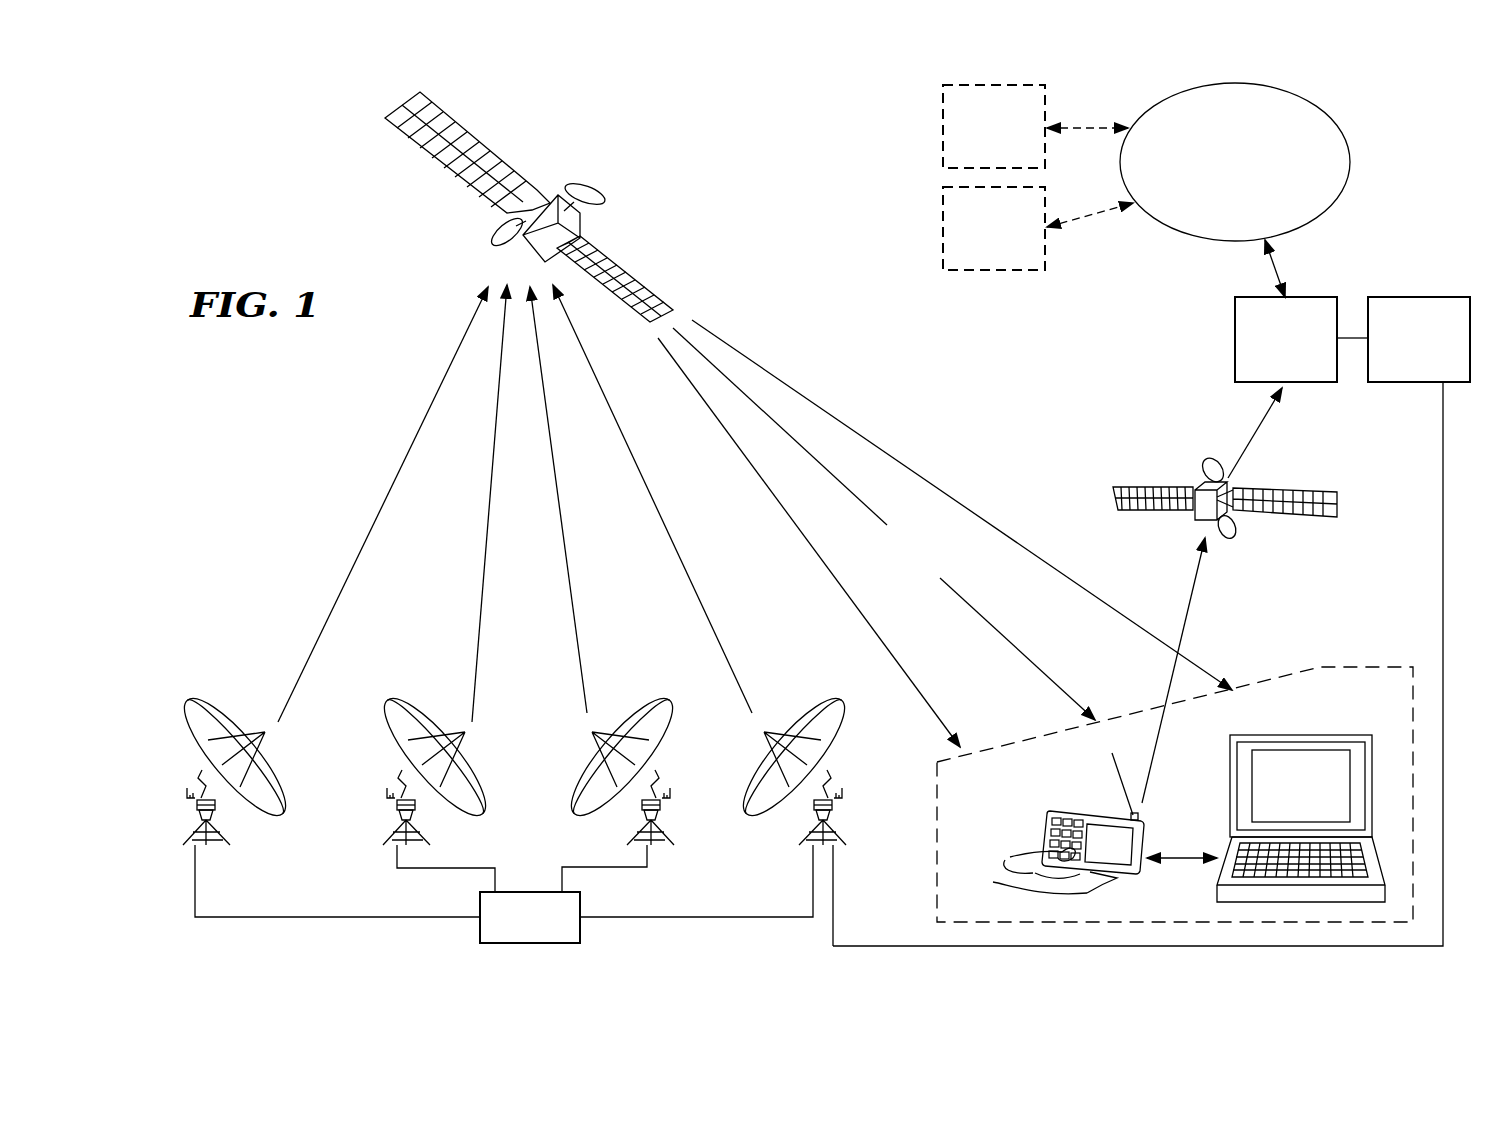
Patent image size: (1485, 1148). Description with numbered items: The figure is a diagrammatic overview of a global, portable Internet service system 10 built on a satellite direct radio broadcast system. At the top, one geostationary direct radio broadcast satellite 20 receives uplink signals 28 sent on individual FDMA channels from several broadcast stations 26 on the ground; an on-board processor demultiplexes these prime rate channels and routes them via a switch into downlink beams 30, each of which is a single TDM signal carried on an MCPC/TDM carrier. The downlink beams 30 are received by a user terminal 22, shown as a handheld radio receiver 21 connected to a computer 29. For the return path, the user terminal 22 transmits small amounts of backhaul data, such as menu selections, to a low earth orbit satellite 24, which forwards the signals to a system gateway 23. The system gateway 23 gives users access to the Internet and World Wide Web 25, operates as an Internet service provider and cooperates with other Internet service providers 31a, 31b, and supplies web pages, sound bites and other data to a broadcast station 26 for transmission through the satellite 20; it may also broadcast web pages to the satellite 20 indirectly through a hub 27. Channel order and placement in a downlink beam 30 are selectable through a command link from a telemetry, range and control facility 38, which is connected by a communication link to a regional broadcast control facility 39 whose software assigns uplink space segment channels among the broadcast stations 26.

The global, portable Internet service system 10 is at (797, 157).
The geostationary direct radio broadcast satellite 20 is at (657, 168).
The handheld radio receiver 21 is at (1092, 812).
The user terminal 22 is at (1352, 664).
The system gateway 23 is at (1235, 337).
The low earth orbit (LEO) satellite 24 is at (1157, 481).
The Internet and World Wide Web 25 is at (1160, 213).
The broadcast station 26 is at (404, 700).
The hub 27 is at (1397, 298).
The uplink signals 28 is at (483, 560).
The computer 29 is at (1328, 738).
The downlink beams 30 is at (924, 695).
The Internet service provider 31a is at (942, 127).
The Internet service provider 31b is at (942, 226).
The telemetry, range and control (TRC) facility 38 is at (226, 705).
The regional broadcast control facility 39 is at (532, 892).